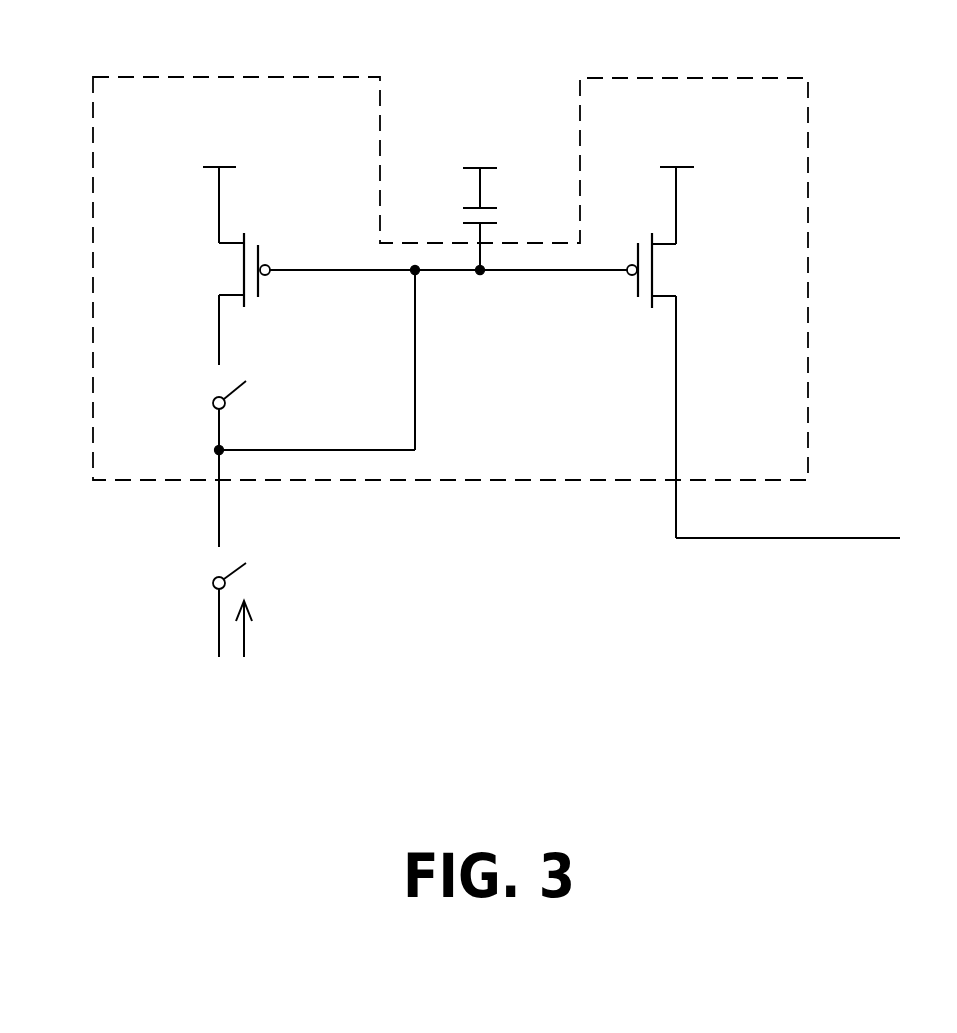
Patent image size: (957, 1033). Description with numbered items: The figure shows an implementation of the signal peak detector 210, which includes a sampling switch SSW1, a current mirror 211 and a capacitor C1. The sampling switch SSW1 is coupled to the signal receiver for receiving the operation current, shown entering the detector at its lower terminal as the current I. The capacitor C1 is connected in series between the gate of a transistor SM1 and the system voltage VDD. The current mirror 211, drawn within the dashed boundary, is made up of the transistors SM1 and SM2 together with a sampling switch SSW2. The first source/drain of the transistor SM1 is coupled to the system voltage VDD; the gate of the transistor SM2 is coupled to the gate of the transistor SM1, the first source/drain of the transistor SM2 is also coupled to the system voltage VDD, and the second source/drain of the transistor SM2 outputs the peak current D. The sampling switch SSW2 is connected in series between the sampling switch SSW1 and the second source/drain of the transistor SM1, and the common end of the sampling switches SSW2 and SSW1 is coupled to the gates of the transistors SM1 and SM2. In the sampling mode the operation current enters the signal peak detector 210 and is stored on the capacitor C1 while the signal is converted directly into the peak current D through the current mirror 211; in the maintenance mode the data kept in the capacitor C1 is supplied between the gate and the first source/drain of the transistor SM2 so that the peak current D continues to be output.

The signal peak detector 210 is at (905, 687).
The current mirror 211 is at (700, 76).
The transistor SM1 is at (220, 266).
The transistor SM2 is at (677, 237).
The sampling switch SSW1 is at (189, 599).
The sampling switch SSW2 is at (274, 452).
The capacitor C1 is at (500, 219).
The system voltage VDD is at (482, 144).
The peak current D is at (788, 417).
The current I is at (250, 629).